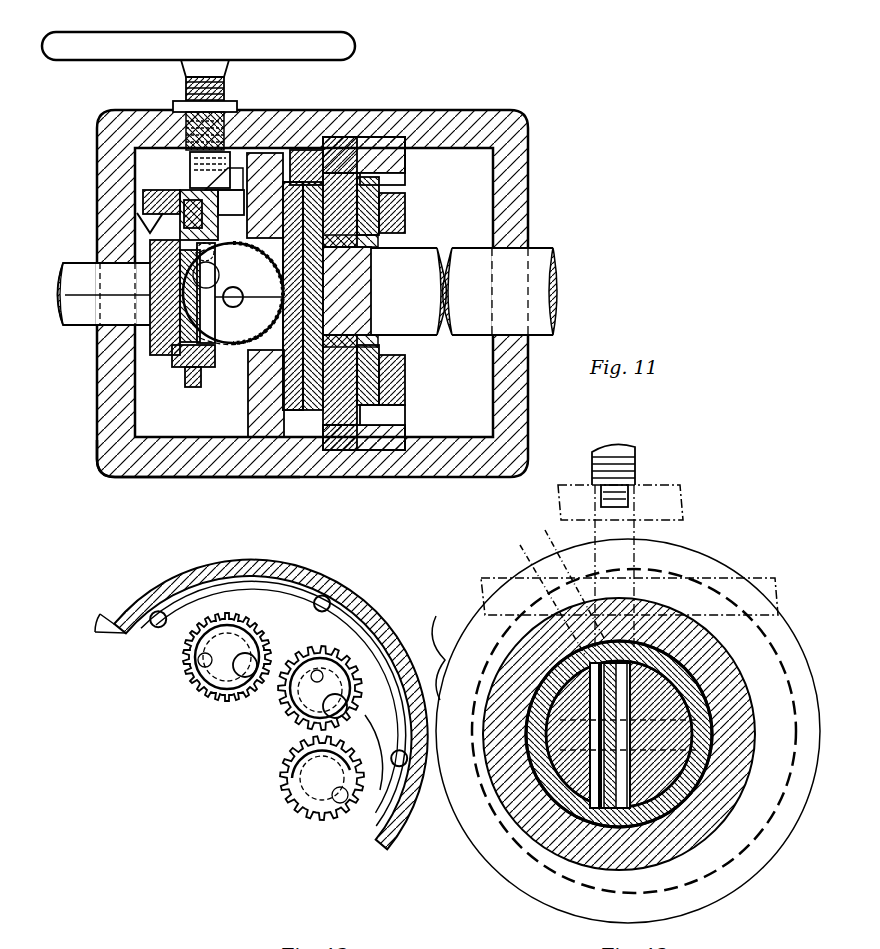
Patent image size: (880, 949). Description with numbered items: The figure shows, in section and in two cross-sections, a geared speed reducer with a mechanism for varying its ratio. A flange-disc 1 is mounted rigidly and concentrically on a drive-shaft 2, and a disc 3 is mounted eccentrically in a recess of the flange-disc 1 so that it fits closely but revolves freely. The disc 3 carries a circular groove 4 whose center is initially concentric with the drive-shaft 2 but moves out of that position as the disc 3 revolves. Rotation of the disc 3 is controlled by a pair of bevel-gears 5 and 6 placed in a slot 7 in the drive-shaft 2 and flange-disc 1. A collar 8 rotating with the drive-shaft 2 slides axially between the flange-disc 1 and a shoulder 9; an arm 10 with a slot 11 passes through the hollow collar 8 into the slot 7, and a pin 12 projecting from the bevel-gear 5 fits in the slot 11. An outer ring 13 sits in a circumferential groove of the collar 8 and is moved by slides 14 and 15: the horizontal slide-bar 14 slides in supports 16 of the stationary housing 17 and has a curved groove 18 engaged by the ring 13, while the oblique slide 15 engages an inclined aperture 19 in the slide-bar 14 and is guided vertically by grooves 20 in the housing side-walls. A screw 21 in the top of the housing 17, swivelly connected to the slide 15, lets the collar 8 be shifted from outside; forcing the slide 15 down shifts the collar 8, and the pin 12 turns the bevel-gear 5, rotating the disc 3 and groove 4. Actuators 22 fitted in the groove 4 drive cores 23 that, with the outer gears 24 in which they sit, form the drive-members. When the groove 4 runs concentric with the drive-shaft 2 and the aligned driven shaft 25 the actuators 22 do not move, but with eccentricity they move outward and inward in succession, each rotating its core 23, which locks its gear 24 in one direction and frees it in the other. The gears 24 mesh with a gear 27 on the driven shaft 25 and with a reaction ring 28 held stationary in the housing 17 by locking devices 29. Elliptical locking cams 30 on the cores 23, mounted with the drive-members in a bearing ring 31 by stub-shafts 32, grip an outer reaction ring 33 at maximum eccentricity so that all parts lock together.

In FIG. 11, the flange-disc 1 is at (212, 470).
In FIG. 12, the flange-disc 1 is at (508, 568).
In FIG. 11, the drive-shaft 2 is at (70, 280).
In FIG. 11, the disc 3 is at (290, 440).
In FIG. 12, the disc 3 is at (712, 578).
In FIG. 11, the circular groove 4 is at (310, 440).
In FIG. 12, the circular groove 4 is at (520, 660).
In FIG. 11, the bevel-gear 5 is at (148, 470).
In FIG. 11, the bevel-gear 6 is at (272, 274).
In FIG. 11, the slot 7 is at (250, 460).
In FIG. 11, the collar 8 is at (180, 365).
In FIG. 11, the shoulder 9 is at (200, 330).
In FIG. 11, the arm 10 is at (238, 306).
In FIG. 11, the slot 11 is at (185, 265).
In FIG. 11, the pin 12 is at (155, 330).
In FIG. 11, the outer ring 13 is at (192, 386).
In FIG. 12, the outer ring 13 is at (512, 630).
In FIG. 11, the horizontal slide-bar 14 is at (140, 215).
In FIG. 12, the horizontal slide-bar 14 is at (755, 580).
In FIG. 11, the oblique slide 15 is at (160, 200).
In FIG. 12, the oblique slide 15 is at (680, 512).
In FIG. 11, the horizontal supports 16 is at (205, 200).
In FIG. 11, the stationary housing 17 is at (507, 110).
In FIG. 13, the stationary housing 17 is at (125, 590).
In FIG. 11, the curved groove 18 is at (233, 214).
In FIG. 12, the curved groove 18 is at (542, 590).
In FIG. 11, the inclined aperture 19 is at (208, 186).
In FIG. 12, the inclined aperture 19 is at (560, 571).
In FIG. 11, the grooves 20 is at (218, 160).
In FIG. 11, the screw 21 is at (188, 84).
In FIG. 12, the screw 21 is at (640, 460).
In FIG. 11, the actuators 22 is at (330, 150).
In FIG. 13, the actuators 22 is at (290, 640).
In FIG. 11, the cores 23 is at (340, 150).
In FIG. 13, the cores 23 is at (245, 630).
In FIG. 11, the outer gears 24 is at (350, 170).
In FIG. 13, the outer gears 24 is at (312, 650).
In FIG. 11, the driven shaft 25 is at (550, 243).
In FIG. 11, the gear 27 is at (380, 258).
In FIG. 13, the reaction ring 28 is at (398, 715).
In FIG. 12, the reaction ring 28 is at (444, 662).
In FIG. 13, the locking devices 29 is at (160, 612).
In FIG. 11, the locking cams 30 is at (400, 196).
In FIG. 13, the locking cams 30 is at (165, 612).
In FIG. 11, the bearing ring 31 is at (382, 188).
In FIG. 11, the stub-shafts 32 is at (400, 212).
In FIG. 13, the stub-shafts 32 is at (370, 660).
In FIG. 11, the outer reaction ring 33 is at (395, 170).